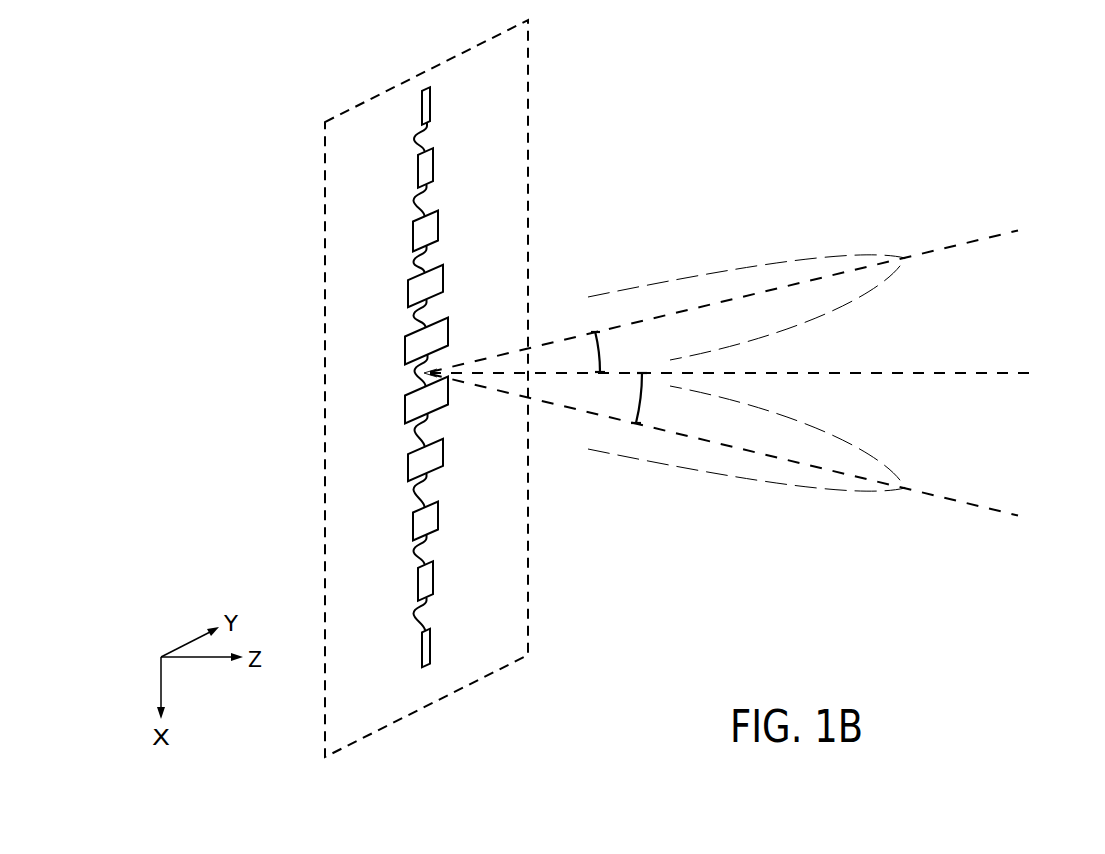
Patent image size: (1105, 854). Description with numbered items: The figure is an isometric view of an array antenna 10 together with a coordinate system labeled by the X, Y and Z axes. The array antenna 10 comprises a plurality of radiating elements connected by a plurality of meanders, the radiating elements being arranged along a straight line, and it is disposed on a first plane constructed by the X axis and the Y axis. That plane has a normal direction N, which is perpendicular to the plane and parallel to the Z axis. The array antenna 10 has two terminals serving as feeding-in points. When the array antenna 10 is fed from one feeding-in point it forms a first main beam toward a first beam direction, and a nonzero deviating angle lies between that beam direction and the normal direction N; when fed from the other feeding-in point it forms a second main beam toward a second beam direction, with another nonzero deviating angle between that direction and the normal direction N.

The array antenna 10 is at (323, 168).
The normal direction N is at (751, 373).